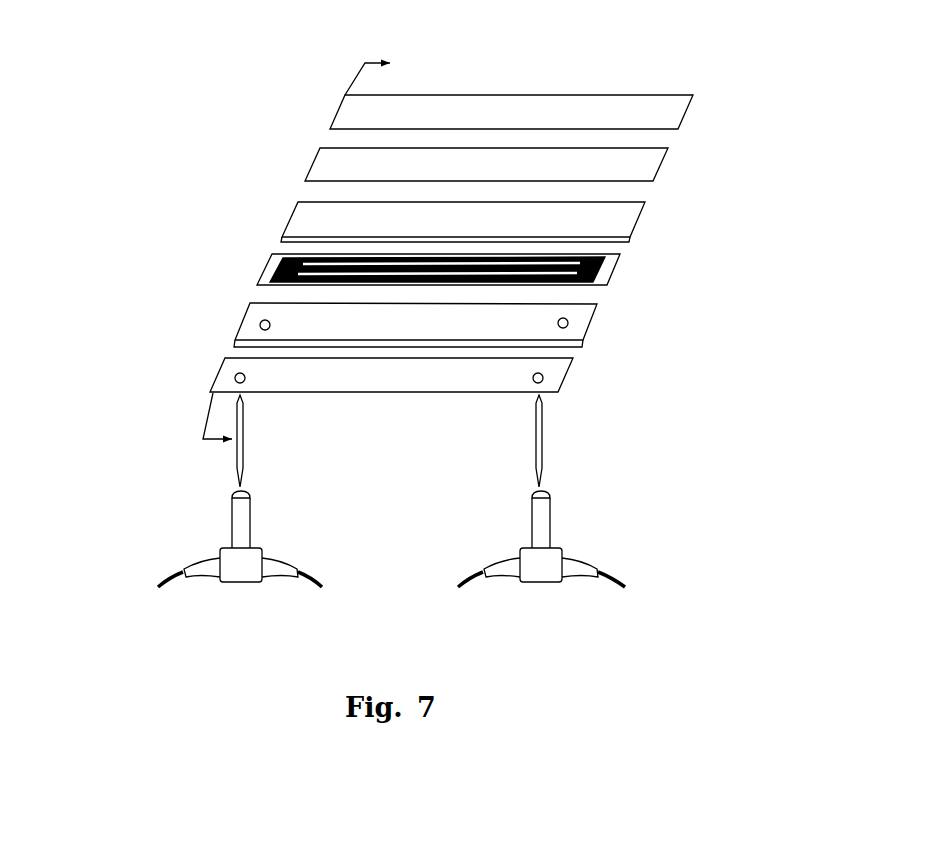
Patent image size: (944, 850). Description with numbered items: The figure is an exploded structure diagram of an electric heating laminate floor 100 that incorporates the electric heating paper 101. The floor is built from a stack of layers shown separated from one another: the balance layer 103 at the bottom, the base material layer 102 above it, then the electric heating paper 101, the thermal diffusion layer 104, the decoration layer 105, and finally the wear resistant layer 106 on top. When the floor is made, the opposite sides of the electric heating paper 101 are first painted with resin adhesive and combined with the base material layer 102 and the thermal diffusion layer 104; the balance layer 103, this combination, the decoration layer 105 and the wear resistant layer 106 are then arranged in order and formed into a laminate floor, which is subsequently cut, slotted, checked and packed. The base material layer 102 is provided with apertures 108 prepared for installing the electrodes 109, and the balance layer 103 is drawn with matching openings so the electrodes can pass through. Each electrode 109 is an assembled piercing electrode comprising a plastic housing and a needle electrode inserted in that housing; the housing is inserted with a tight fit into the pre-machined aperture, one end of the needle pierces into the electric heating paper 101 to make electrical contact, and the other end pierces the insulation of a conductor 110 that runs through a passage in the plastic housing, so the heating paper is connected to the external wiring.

The heating device assembly 100 is at (295, 153).
The electric heating paper 101 is at (603, 275).
The base material layer 102 is at (580, 330).
The balance layer 103 is at (555, 387).
The thermal diffusion layer 104 is at (630, 223).
The decoration layer 105 is at (657, 167).
The wear resistant layer 106 is at (675, 110).
The aperture 108 is at (262, 322).
The electrode 109 is at (240, 535).
The lead wires 110 is at (163, 580).